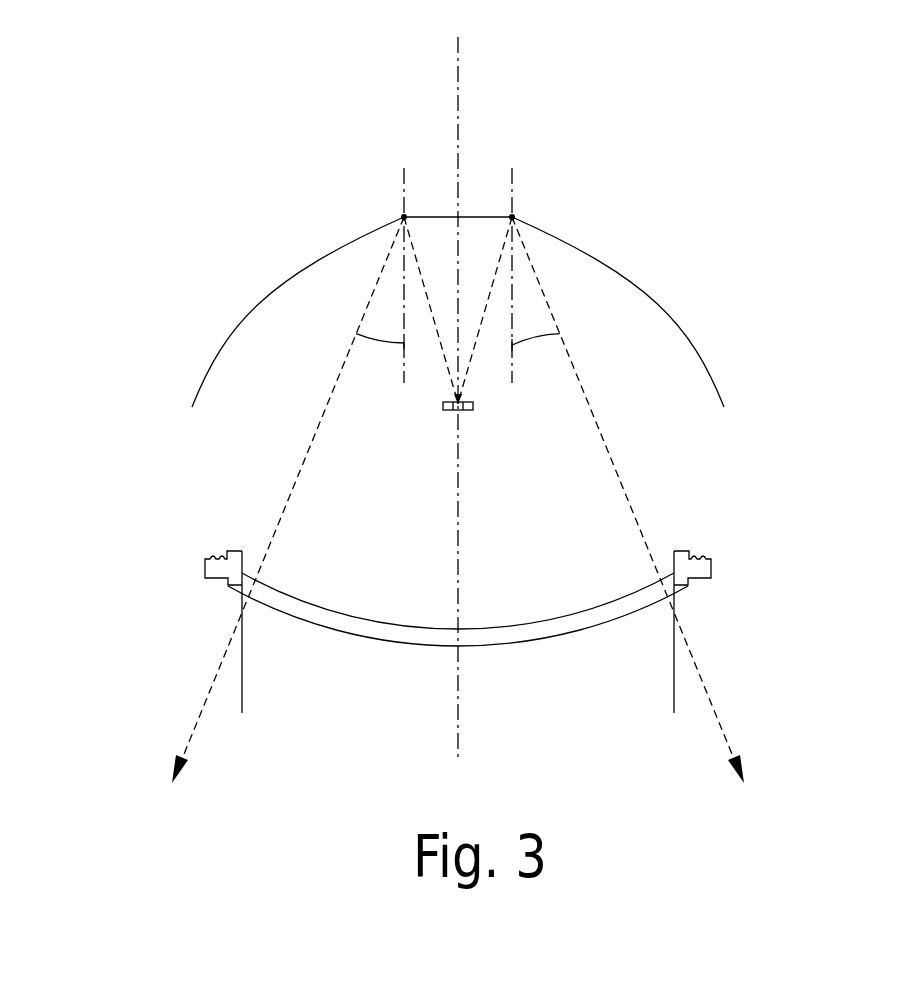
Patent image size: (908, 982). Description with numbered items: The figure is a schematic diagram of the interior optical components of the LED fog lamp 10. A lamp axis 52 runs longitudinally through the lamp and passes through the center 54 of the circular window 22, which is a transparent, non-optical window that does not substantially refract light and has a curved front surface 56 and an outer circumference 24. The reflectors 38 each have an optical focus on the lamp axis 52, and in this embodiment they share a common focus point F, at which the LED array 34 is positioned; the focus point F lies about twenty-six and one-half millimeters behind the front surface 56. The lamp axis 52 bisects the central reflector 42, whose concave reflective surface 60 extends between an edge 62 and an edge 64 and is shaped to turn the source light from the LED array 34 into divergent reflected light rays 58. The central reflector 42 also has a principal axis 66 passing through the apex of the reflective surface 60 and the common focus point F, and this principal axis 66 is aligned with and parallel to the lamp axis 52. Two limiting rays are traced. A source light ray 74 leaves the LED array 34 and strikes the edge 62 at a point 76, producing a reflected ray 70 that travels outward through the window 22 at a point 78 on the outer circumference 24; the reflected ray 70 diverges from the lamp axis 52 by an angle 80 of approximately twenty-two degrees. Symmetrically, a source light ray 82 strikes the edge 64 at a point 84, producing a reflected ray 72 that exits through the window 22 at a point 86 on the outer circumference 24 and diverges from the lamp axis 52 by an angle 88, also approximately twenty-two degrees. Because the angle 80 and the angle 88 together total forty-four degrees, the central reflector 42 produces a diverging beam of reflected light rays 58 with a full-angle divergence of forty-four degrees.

The fog lamp 10 is at (781, 181).
The window 22 is at (458, 649).
The outer circumference 24 is at (458, 632).
The LED array 34 is at (465, 402).
The reflectors 38 is at (122, 333).
The central reflector 42 is at (483, 215).
The lamp axis 52 is at (501, 397).
The center 54 is at (460, 636).
The front surface 56 is at (526, 660).
The reflected light rays 58 is at (694, 743).
The reflective surface 60 is at (475, 162).
The edge 62 is at (399, 205).
The edge 64 is at (517, 205).
The principal axis 66 is at (459, 86).
The reflected ray 70 is at (303, 463).
The reflected ray 72 is at (613, 461).
The source light ray 74 is at (415, 249).
The point 76 is at (400, 224).
The point 78 is at (253, 585).
The angle 80 is at (380, 343).
The source light ray 82 is at (492, 289).
The point 84 is at (516, 226).
The point 86 is at (666, 594).
The angle 88 is at (542, 345).
The common focus point F is at (465, 413).